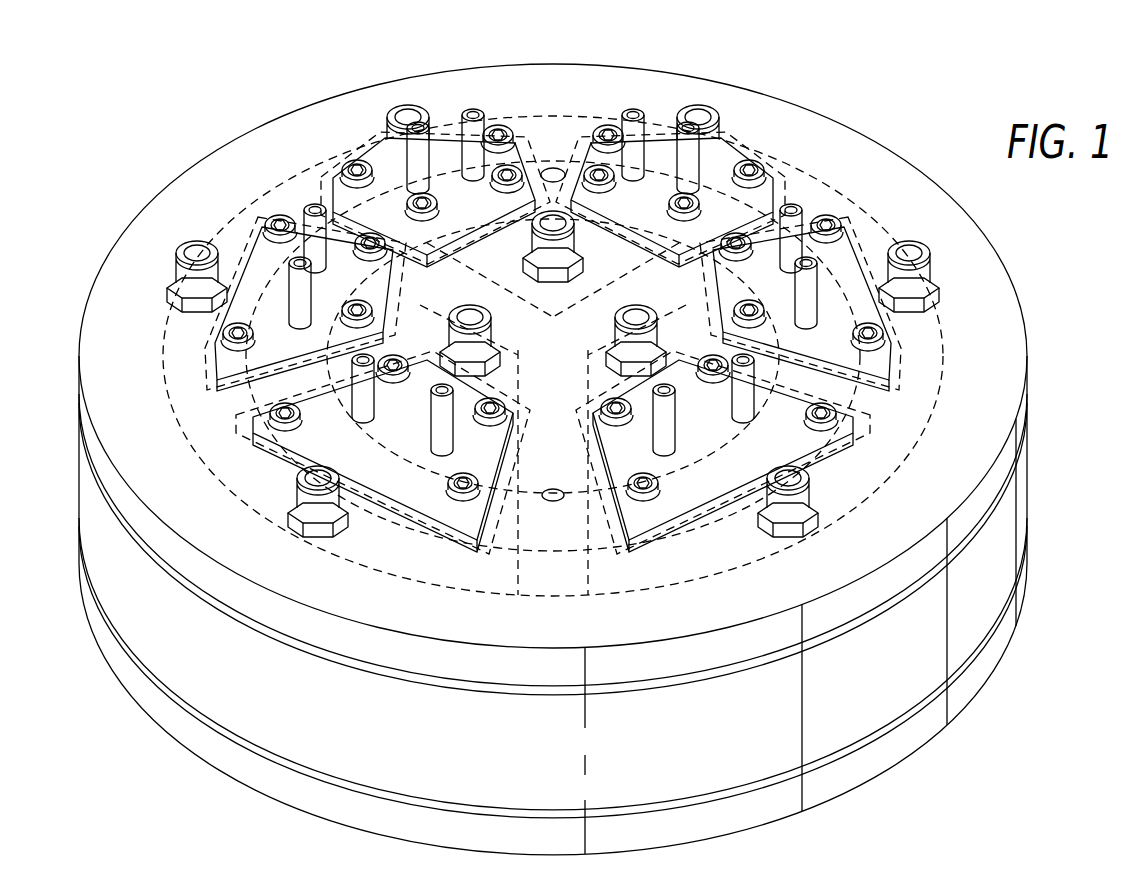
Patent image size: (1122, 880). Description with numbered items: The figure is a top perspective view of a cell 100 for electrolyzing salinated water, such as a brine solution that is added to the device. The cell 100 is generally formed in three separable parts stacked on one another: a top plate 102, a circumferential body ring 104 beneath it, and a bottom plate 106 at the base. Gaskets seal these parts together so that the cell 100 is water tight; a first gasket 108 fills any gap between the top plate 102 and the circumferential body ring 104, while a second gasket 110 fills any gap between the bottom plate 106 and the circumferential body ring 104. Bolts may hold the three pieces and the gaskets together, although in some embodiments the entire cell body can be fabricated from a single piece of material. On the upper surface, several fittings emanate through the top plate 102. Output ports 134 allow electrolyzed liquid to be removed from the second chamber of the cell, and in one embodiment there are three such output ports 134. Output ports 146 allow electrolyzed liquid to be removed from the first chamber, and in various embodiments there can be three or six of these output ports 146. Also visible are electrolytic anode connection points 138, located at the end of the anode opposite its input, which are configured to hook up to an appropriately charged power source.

The cell 100 is at (900, 117).
The top plate 102 is at (1000, 327).
The circumferential body ring 104 is at (1020, 490).
The bottom plate 106 is at (970, 685).
The first gasket 108 is at (980, 530).
The second gasket 110 is at (998, 625).
The output ports 134 is at (553, 220).
The electrolytic anode connection point 138 is at (308, 213).
The output ports 146 is at (408, 112).